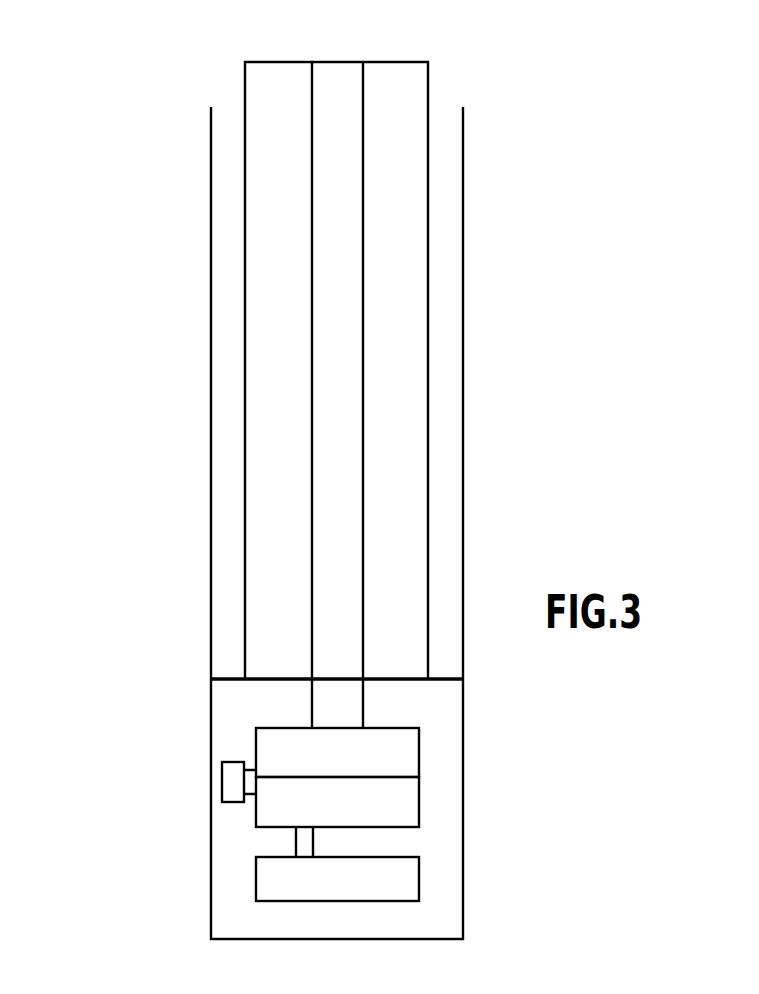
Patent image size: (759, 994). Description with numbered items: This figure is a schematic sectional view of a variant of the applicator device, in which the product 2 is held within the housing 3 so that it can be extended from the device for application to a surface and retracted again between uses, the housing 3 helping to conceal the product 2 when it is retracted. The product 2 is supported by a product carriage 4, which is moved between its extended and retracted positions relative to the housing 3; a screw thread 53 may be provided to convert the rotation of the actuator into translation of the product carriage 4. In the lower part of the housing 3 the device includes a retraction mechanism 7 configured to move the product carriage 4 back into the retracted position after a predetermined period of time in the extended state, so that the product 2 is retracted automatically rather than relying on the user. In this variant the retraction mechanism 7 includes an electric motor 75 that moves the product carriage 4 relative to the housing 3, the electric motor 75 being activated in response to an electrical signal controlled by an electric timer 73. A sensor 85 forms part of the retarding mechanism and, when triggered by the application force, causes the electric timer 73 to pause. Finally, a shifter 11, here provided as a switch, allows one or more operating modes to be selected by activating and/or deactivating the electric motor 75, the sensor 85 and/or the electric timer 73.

The product 2 is at (338, 62).
The housing 3 is at (464, 320).
The product carriage 4 is at (228, 679).
The retraction mechanism 7 is at (98, 789).
The shifter 11 is at (206, 775).
The screw thread 53 is at (355, 710).
The electric timer 73 is at (403, 878).
The electric motor 75 is at (390, 757).
The sensor 85 is at (390, 812).